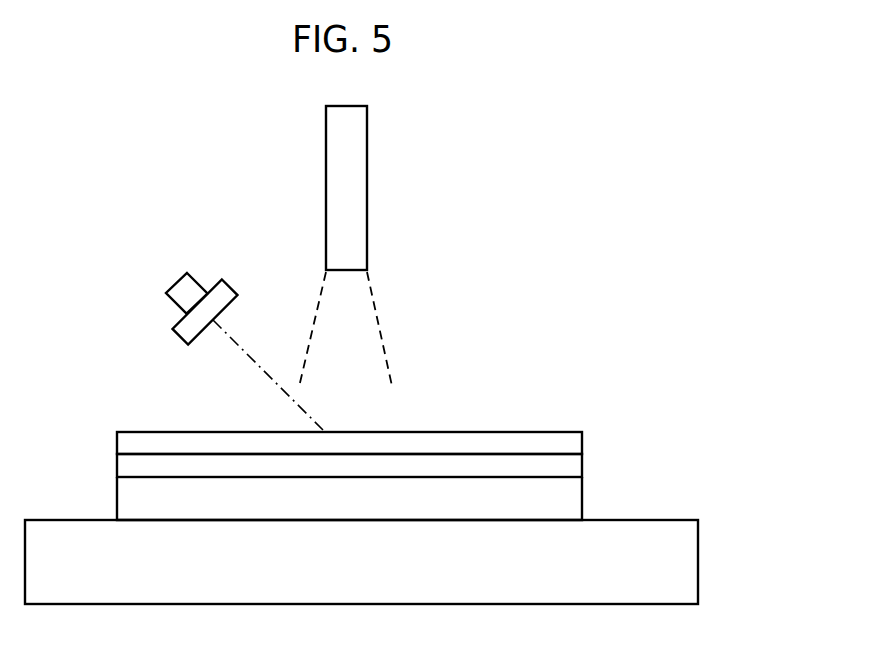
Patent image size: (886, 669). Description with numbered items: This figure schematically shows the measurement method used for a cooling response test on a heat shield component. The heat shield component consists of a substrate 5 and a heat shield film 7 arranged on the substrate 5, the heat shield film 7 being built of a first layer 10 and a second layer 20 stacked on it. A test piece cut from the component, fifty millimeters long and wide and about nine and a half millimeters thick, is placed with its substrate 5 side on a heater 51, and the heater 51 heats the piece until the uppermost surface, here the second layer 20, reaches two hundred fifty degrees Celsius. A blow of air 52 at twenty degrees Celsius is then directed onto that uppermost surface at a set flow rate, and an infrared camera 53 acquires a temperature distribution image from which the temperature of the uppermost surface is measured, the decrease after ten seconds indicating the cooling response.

The substrate 5 is at (575, 505).
The heat shield film 7 is at (405, 448).
The first layer 10 is at (575, 468).
The second layer 20 is at (580, 442).
The heater 51 is at (687, 567).
The blow of air 52 is at (355, 303).
The infrared camera 53 is at (187, 327).